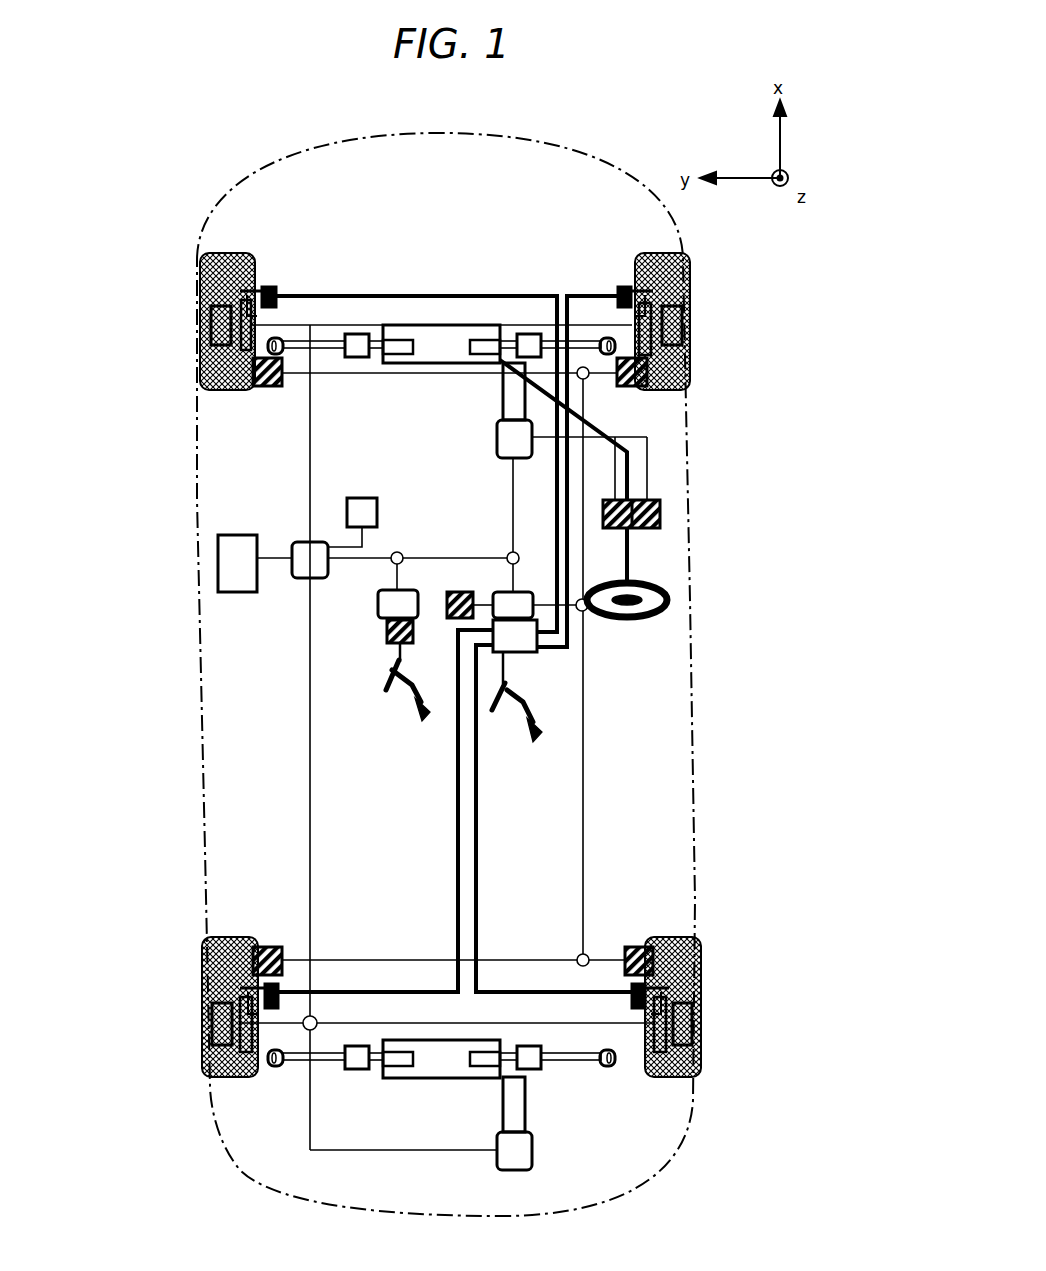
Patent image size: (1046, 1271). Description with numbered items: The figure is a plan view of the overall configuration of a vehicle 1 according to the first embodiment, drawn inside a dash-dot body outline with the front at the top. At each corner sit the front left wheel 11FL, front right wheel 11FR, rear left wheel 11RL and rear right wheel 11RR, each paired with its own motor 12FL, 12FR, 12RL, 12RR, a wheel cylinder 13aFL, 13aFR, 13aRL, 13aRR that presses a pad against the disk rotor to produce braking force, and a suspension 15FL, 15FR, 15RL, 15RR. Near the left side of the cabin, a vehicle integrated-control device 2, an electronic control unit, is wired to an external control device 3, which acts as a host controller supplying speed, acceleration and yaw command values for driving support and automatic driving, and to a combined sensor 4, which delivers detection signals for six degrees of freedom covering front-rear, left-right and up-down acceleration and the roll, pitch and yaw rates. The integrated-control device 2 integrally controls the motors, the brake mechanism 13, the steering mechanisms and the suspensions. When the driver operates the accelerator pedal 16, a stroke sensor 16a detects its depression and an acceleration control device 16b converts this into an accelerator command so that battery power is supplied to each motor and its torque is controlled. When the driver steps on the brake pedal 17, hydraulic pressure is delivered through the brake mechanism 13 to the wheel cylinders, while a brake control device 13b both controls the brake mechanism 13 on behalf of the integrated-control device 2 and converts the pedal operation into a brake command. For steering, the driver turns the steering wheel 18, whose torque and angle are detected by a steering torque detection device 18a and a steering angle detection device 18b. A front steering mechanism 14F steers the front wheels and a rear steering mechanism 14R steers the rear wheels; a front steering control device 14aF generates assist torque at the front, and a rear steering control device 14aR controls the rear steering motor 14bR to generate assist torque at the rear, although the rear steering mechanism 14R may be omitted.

The vehicle 1 is at (170, 169).
The vehicle integrated-control device 2 is at (296, 540).
The external control device 3 is at (222, 556).
The combined sensor 4 is at (362, 497).
The front left wheel 11FL is at (200, 374).
The front right wheel 11FR is at (692, 375).
The rear left wheel 11RL is at (202, 960).
The rear right wheel 11RR is at (701, 960).
The front left motor 12FL is at (215, 322).
The front right motor 12FR is at (683, 322).
The rear left motor 12RL is at (215, 1020).
The rear right motor 12RR is at (693, 1020).
The brake mechanism 13 is at (529, 655).
The front left wheel cylinder 13aFL is at (250, 291).
The front right wheel cylinder 13aFR is at (662, 290).
The rear left wheel cylinder 13aRL is at (250, 1050).
The rear right wheel cylinder 13aRR is at (680, 1050).
The brake control device 13b is at (502, 592).
The front steering mechanism 14F is at (333, 325).
The rear steering mechanism 14R is at (333, 1050).
The front steering control device 14aF is at (497, 437).
The rear steering control device 14aR is at (497, 1152).
The rear steering motor 14bR is at (503, 1108).
The front left suspension 15FL is at (265, 390).
The front right suspension 15FR is at (635, 390).
The rear left suspension 15RL is at (265, 946).
The rear right suspension 15RR is at (650, 946).
The accelerator pedal 16 is at (395, 702).
The stroke sensor 16a is at (388, 632).
The acceleration control device 16b is at (405, 592).
The brake pedal 17 is at (540, 724).
The steering wheel 18 is at (668, 575).
The steering torque detection device 18a is at (662, 515).
The steering angle detection device 18b is at (649, 470).